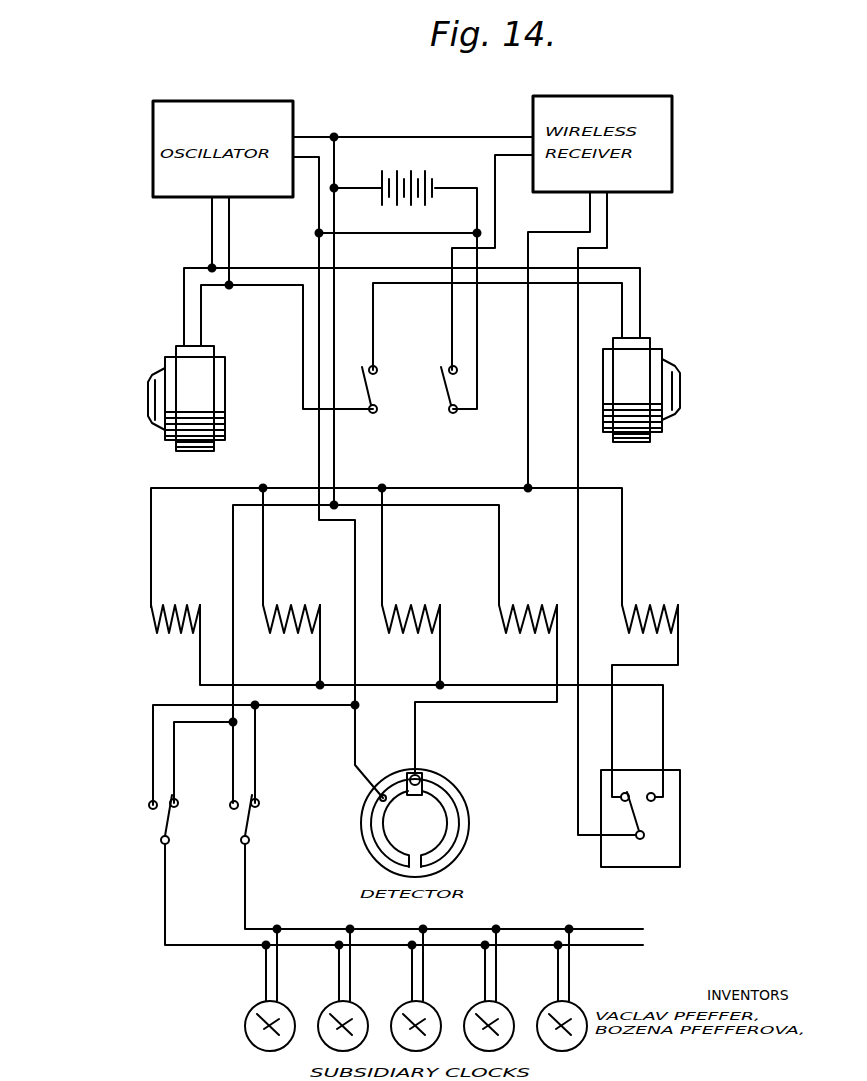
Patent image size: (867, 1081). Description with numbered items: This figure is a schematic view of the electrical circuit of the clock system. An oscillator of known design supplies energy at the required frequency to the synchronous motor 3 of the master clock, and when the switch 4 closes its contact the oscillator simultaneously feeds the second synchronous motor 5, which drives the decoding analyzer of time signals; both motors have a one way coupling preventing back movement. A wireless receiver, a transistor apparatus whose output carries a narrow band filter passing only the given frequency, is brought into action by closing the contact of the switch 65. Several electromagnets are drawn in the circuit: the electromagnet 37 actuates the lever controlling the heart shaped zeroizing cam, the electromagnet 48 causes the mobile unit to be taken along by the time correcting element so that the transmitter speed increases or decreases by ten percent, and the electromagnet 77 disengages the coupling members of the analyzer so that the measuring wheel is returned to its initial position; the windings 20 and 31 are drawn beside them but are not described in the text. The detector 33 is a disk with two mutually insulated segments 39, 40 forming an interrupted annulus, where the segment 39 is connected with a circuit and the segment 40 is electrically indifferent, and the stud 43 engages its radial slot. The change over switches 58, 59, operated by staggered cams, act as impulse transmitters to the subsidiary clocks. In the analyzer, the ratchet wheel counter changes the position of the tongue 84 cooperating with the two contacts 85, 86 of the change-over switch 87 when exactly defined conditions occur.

The synchronous motor 3 is at (218, 375).
The switch 4 is at (369, 397).
The second synchronous motor 5 is at (613, 378).
The switch 65 is at (445, 385).
The relay coil 20 is at (177, 608).
The electromagnet 48 is at (292, 607).
The electromagnet 37 is at (408, 607).
The relay coil 31 is at (523, 607).
The electromagnet 77 is at (650, 605).
The change over switch 58 is at (161, 825).
The change over switch 59 is at (249, 825).
The detector 33 is at (448, 806).
The segment 39 is at (363, 834).
The segment 40 is at (460, 847).
The stud 43 is at (418, 777).
The tongue 84 is at (648, 818).
The contact 85 is at (600, 792).
The contact 86 is at (656, 790).
The change-over switch 87 is at (655, 862).